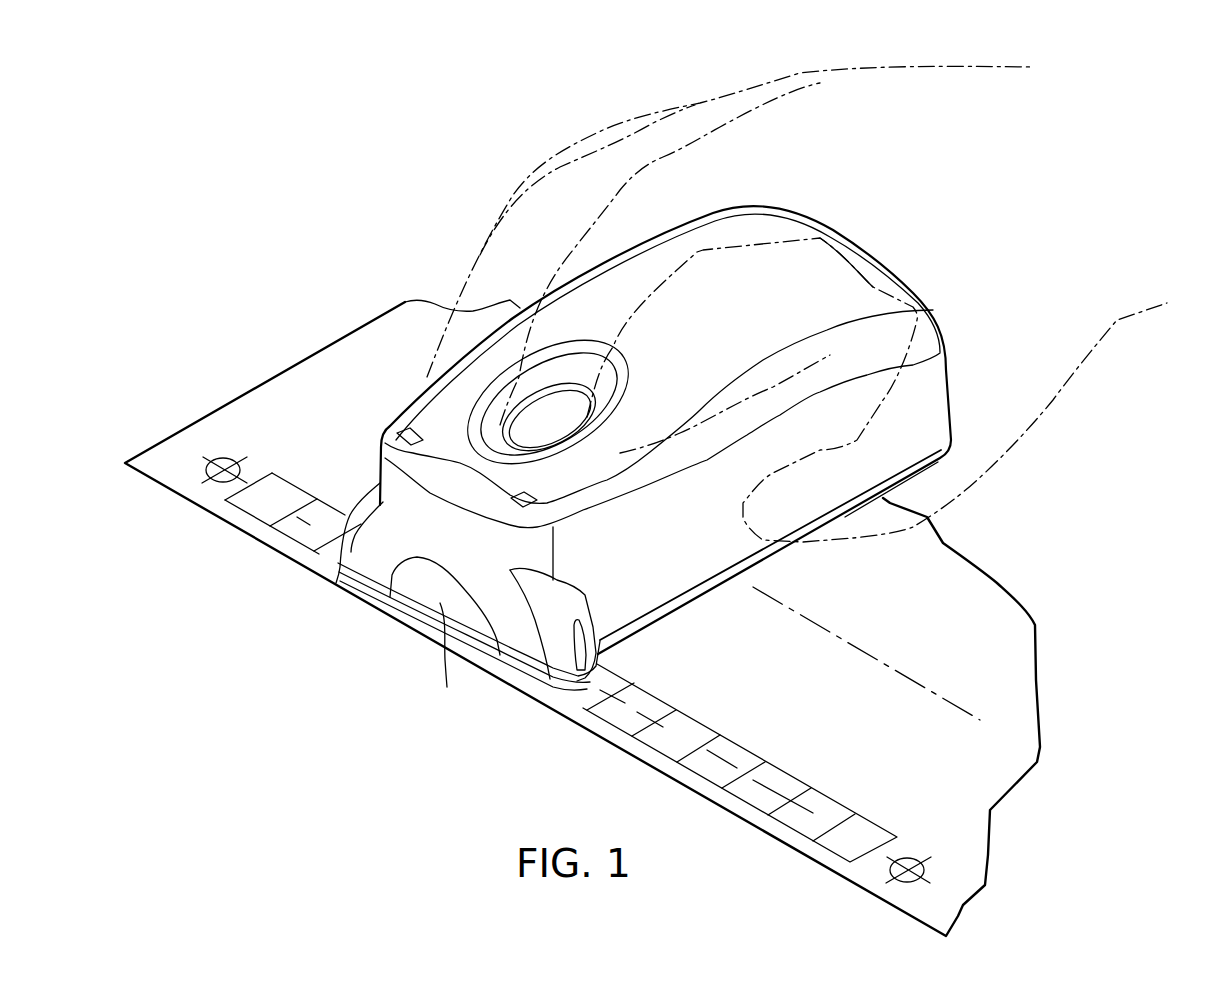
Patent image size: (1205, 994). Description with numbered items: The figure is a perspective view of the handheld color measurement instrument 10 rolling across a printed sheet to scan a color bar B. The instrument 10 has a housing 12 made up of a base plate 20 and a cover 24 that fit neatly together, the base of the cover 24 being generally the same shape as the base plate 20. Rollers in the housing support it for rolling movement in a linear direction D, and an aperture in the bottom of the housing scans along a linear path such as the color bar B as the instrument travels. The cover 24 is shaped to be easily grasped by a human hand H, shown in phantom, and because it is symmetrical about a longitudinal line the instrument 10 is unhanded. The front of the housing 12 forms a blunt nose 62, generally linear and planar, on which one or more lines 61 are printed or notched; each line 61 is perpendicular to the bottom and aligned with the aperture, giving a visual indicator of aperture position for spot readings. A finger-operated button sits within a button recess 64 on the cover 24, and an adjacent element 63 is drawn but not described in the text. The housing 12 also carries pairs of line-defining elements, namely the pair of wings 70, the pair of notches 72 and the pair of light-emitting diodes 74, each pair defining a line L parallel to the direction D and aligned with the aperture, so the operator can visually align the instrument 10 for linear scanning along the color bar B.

The handheld color measurement instrument 10 is at (383, 404).
The housing 12 is at (968, 386).
The base plate 20 is at (938, 465).
The cover 24 is at (857, 290).
The lines 61 is at (448, 500).
The blunt nose 62 is at (374, 577).
The lens 63 is at (555, 416).
The button recess 64 is at (620, 364).
The wings 70 is at (341, 567).
The notches 72 is at (580, 656).
The light-emitting diodes 74 is at (418, 431).
The color bar B is at (878, 810).
The line L is at (286, 482).
The linear direction D is at (848, 641).
The human hand H is at (1068, 400).